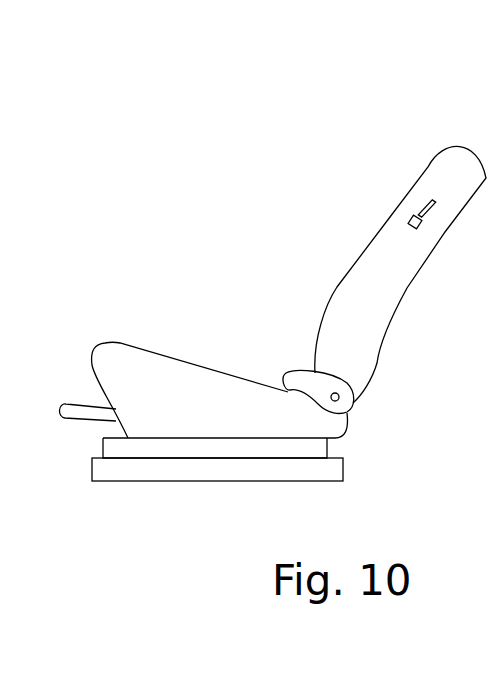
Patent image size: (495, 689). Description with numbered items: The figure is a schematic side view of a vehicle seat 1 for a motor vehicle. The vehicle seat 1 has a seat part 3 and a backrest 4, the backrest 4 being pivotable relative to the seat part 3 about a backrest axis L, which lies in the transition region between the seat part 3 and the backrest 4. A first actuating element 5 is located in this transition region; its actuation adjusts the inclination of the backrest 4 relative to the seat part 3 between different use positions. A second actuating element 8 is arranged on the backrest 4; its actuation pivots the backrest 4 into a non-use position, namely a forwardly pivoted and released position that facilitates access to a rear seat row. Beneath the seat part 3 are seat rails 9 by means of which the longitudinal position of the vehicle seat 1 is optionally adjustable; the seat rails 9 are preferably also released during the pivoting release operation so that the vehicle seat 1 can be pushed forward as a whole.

The vehicle seat 1 is at (270, 257).
The seat part 3 is at (173, 378).
The backrest 4 is at (373, 263).
The first actuating element 5 is at (290, 371).
The second actuating element 8 is at (412, 219).
The seat rails 9 is at (198, 472).
The backrest axis L is at (338, 400).